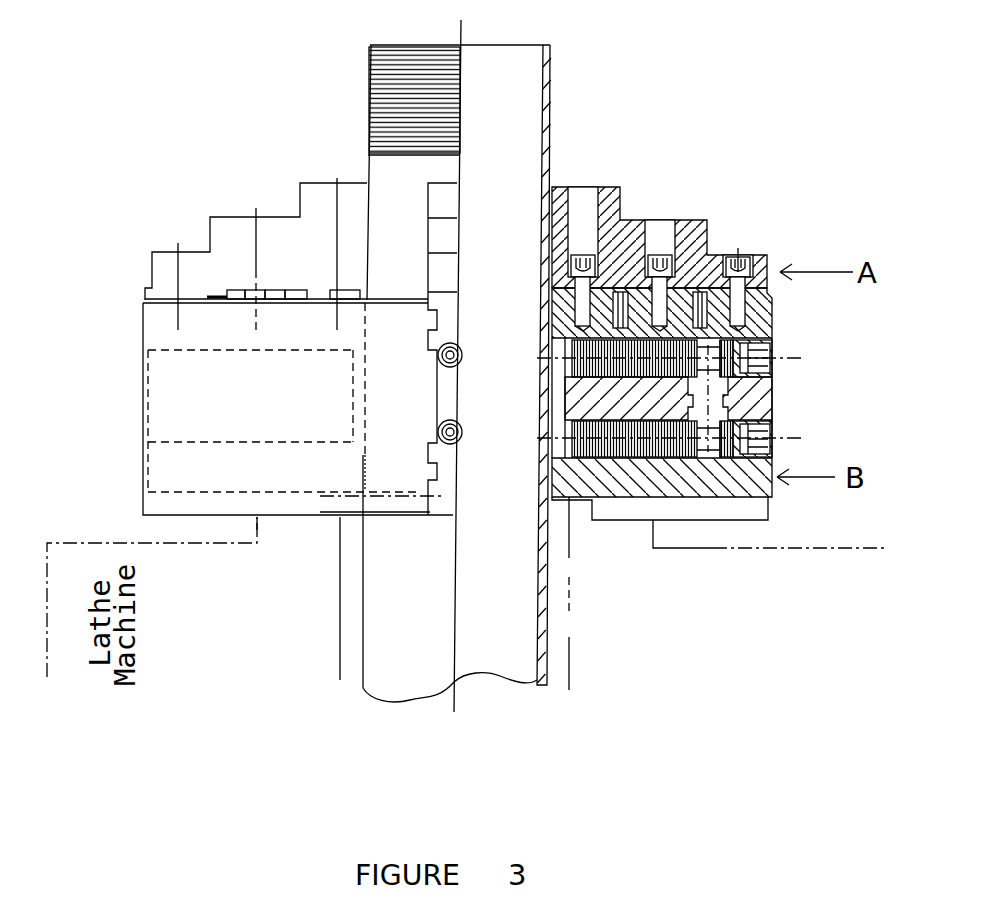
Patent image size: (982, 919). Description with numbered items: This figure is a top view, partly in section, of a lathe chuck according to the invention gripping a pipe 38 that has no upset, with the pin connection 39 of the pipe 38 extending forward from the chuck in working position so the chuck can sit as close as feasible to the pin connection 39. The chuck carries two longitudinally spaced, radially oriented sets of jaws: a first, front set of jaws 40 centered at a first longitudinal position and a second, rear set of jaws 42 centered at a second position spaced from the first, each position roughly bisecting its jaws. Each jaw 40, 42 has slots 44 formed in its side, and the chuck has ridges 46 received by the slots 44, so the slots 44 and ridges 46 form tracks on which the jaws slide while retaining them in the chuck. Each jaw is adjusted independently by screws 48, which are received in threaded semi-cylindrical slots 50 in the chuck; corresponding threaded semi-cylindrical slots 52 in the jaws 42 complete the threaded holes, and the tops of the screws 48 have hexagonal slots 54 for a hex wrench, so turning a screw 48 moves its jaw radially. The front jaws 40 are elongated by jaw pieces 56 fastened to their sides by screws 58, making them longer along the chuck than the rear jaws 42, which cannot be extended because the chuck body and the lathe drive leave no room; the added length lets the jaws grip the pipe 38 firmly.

The pipe 38 is at (545, 633).
The pin connection 39 is at (551, 118).
The first set of jaws 40 is at (160, 320).
The second set of jaws 42 is at (160, 468).
The slots 44 is at (430, 292).
The ridges 46 is at (367, 292).
The screws 48 is at (770, 380).
The threaded semi-cylindrical slots 50 is at (443, 426).
The threaded semi-cylindrical slots 52 is at (428, 455).
The hexagonal slots 54 is at (438, 355).
The jaw pieces 56 is at (227, 250).
The screws 58 is at (584, 272).